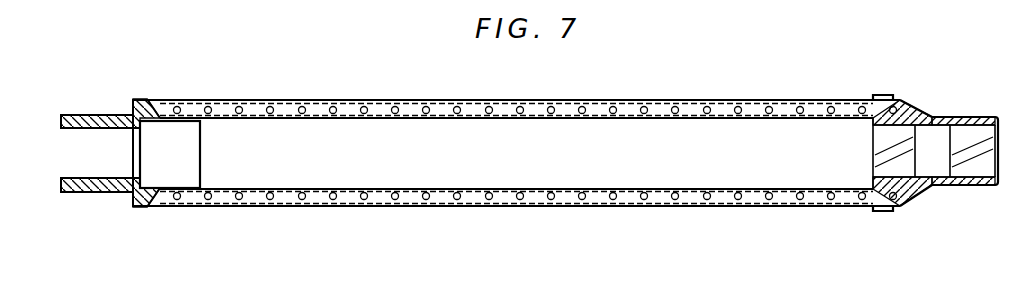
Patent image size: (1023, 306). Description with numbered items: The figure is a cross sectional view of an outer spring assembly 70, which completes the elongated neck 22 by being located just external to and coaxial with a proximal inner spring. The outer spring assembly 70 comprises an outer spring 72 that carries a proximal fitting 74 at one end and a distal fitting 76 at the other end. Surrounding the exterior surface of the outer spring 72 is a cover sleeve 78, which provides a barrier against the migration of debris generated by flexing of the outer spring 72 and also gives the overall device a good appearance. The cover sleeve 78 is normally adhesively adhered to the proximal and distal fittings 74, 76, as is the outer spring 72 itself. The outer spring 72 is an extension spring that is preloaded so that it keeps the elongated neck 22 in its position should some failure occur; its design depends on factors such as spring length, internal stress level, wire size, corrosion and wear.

The outer spring assembly 70 is at (353, 81).
The outer spring 72 is at (695, 200).
The proximal fitting 74 is at (87, 193).
The distal fitting 76 is at (972, 186).
The cover sleeve 78 is at (737, 101).
The elongated neck 22 is at (889, 74).